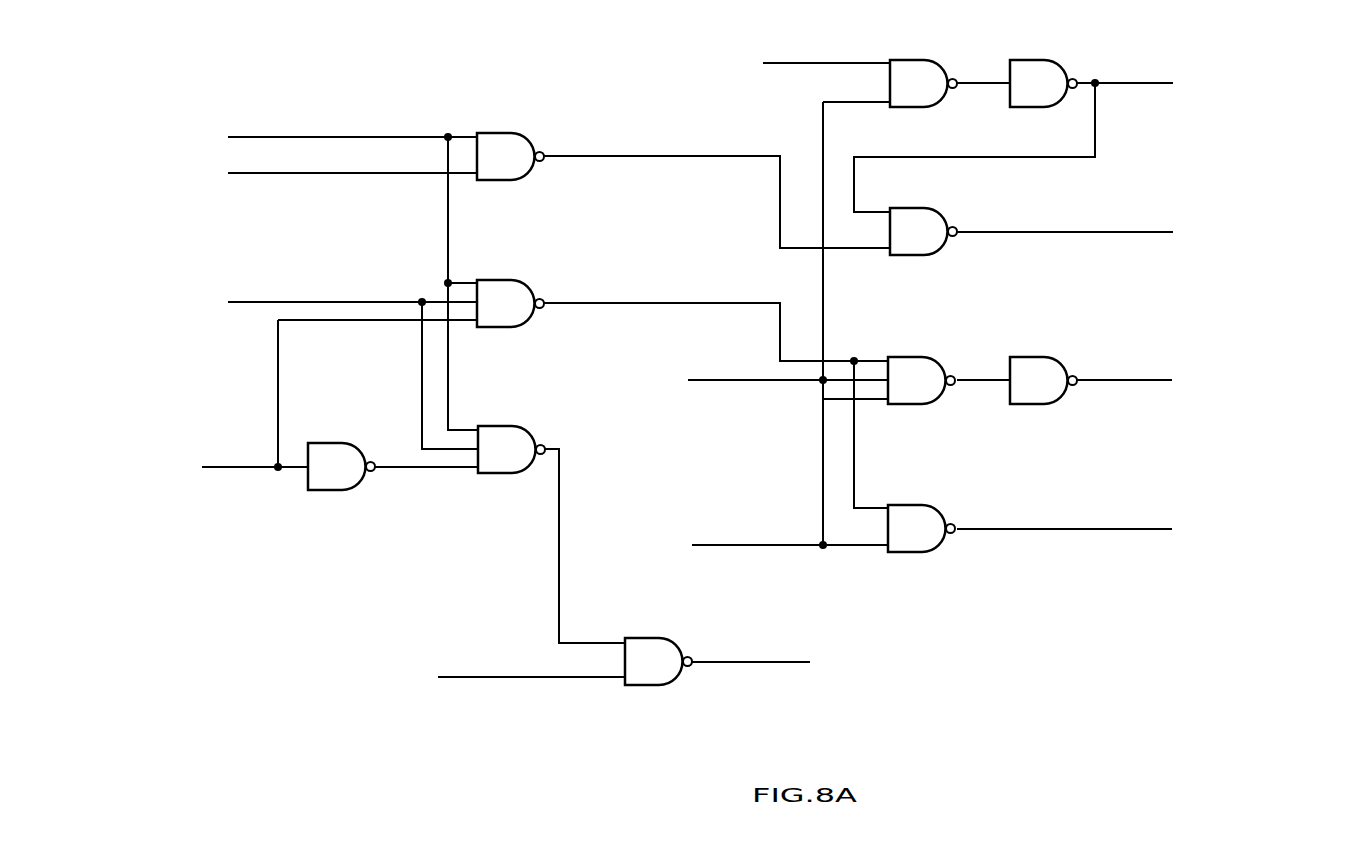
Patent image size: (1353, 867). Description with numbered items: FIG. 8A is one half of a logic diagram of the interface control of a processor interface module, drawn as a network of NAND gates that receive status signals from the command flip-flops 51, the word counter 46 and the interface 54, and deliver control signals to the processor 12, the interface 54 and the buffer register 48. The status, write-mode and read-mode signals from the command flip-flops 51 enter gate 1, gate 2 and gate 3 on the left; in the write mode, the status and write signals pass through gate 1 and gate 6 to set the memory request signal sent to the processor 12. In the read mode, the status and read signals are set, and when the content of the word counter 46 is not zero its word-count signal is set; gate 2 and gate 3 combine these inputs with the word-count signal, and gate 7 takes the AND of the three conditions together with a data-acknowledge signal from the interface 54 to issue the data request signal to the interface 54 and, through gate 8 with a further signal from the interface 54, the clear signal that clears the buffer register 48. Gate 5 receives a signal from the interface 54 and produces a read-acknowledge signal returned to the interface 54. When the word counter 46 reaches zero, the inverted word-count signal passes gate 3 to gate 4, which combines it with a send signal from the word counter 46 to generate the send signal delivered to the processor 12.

The command flip-flops 51 is at (222, 310).
The word counter 46 is at (357, 572).
The interface 54 is at (946, 304).
The processor 12 is at (1010, 442).
The buffer register 48 is at (1151, 524).
The gate 1 is at (503, 168).
The gate 2 is at (503, 315).
The gate 3 is at (504, 461).
The gate 4 is at (651, 673).
The gate 5 is at (916, 95).
The gate 6 is at (916, 243).
The gate 7 is at (914, 392).
The gate 8 is at (914, 540).